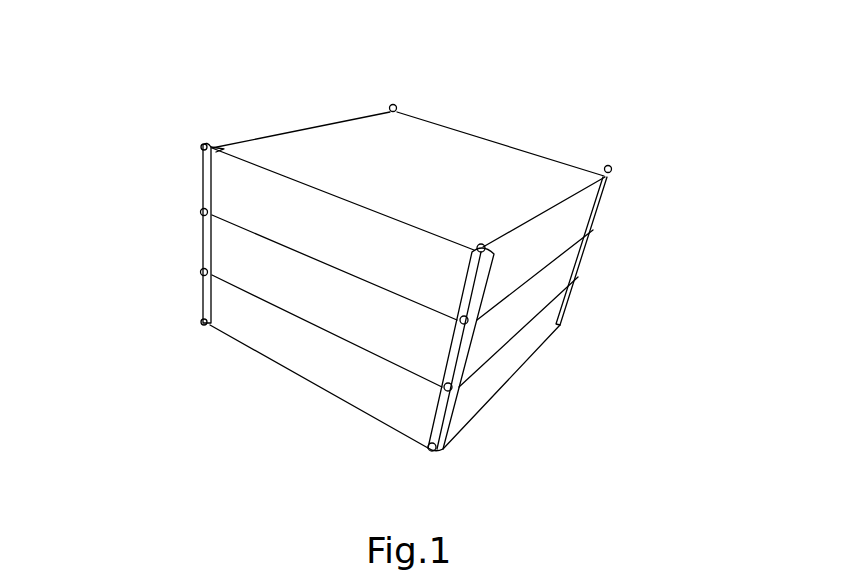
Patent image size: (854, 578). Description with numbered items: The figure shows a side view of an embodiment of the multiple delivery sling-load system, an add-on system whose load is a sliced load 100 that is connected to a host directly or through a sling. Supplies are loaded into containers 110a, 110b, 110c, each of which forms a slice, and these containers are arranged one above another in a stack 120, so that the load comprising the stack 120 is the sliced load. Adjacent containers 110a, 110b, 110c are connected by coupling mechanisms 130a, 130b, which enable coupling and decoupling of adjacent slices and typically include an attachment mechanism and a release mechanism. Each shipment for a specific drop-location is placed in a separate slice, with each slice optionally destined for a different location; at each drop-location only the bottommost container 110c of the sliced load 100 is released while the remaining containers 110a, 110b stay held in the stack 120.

The sliced load 100 is at (405, 278).
The container 110a is at (530, 263).
The container 110b is at (503, 330).
The container 110c is at (529, 387).
The stack 120 is at (578, 308).
The coupling mechanism 130a is at (203, 213).
The coupling mechanism 130b is at (203, 272).